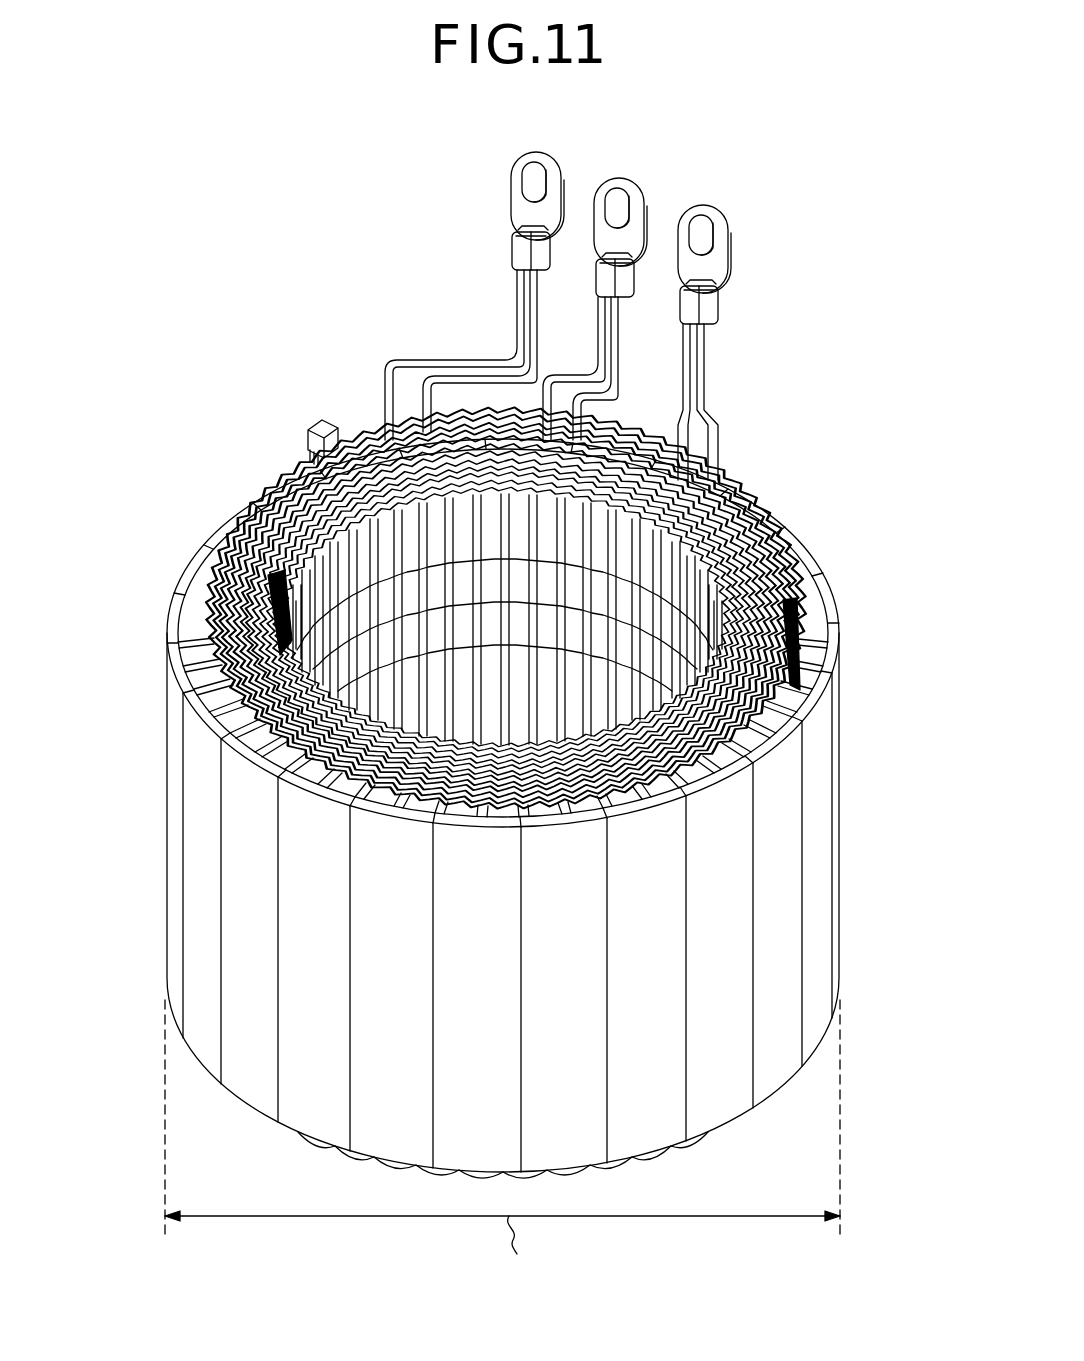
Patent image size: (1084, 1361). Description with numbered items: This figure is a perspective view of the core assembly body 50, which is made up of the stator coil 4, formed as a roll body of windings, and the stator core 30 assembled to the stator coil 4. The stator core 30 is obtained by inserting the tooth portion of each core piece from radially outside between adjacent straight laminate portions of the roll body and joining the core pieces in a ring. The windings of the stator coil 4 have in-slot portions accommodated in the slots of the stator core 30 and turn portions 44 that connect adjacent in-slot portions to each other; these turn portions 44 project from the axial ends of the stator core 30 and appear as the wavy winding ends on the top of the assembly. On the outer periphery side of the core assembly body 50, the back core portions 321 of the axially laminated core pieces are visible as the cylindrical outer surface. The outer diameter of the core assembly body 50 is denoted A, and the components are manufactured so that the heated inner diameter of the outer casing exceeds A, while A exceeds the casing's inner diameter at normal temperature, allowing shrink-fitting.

The stator coil 4 is at (432, 607).
The stator core 30 is at (834, 606).
The turn portions 44 is at (215, 652).
The core assembly body 50 is at (314, 309).
The back core portions 321 is at (774, 889).
The outer diameter of the core assembly body A is at (502, 1143).